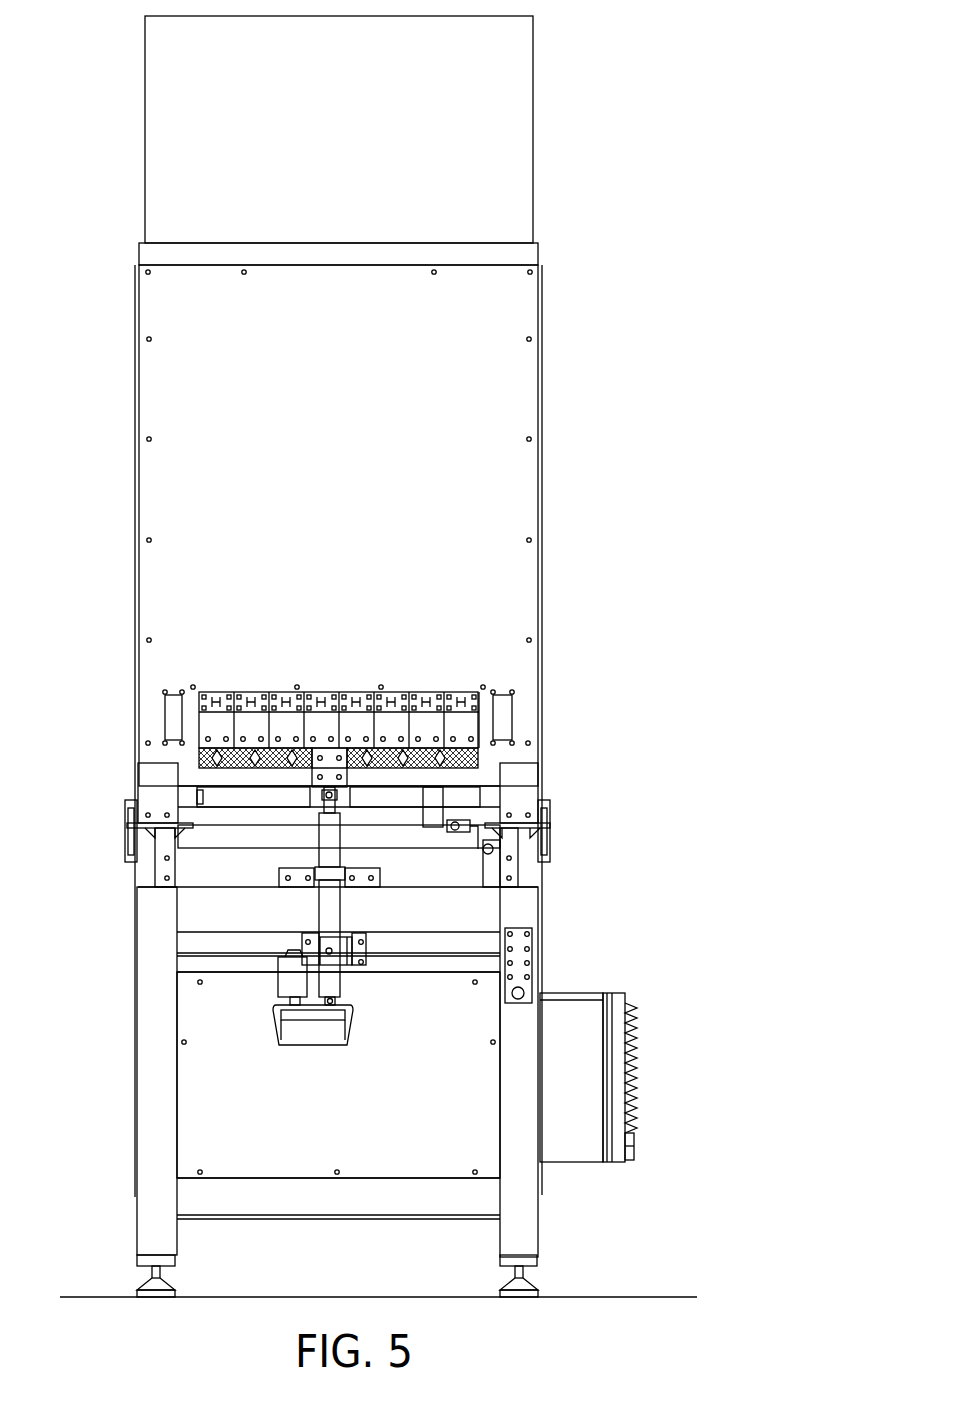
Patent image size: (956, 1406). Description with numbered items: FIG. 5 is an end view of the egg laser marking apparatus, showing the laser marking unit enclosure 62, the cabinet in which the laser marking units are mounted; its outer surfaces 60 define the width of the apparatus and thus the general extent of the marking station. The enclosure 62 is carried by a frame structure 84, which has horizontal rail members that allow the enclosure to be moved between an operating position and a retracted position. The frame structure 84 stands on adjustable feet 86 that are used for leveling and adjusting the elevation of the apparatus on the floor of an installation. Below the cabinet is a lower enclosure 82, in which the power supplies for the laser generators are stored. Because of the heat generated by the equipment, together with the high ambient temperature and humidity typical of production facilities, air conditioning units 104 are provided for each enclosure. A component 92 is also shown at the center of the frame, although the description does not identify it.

The air conditioning unit 104 is at (463, 99).
The laser marking unit enclosure 62 is at (468, 405).
The outer surfaces 60 is at (135, 488).
The actuator cylinder 92 is at (330, 980).
The lower enclosure 82 is at (401, 1135).
The frame structure 84 is at (155, 1224).
The adjustable feet 86 is at (150, 1287).